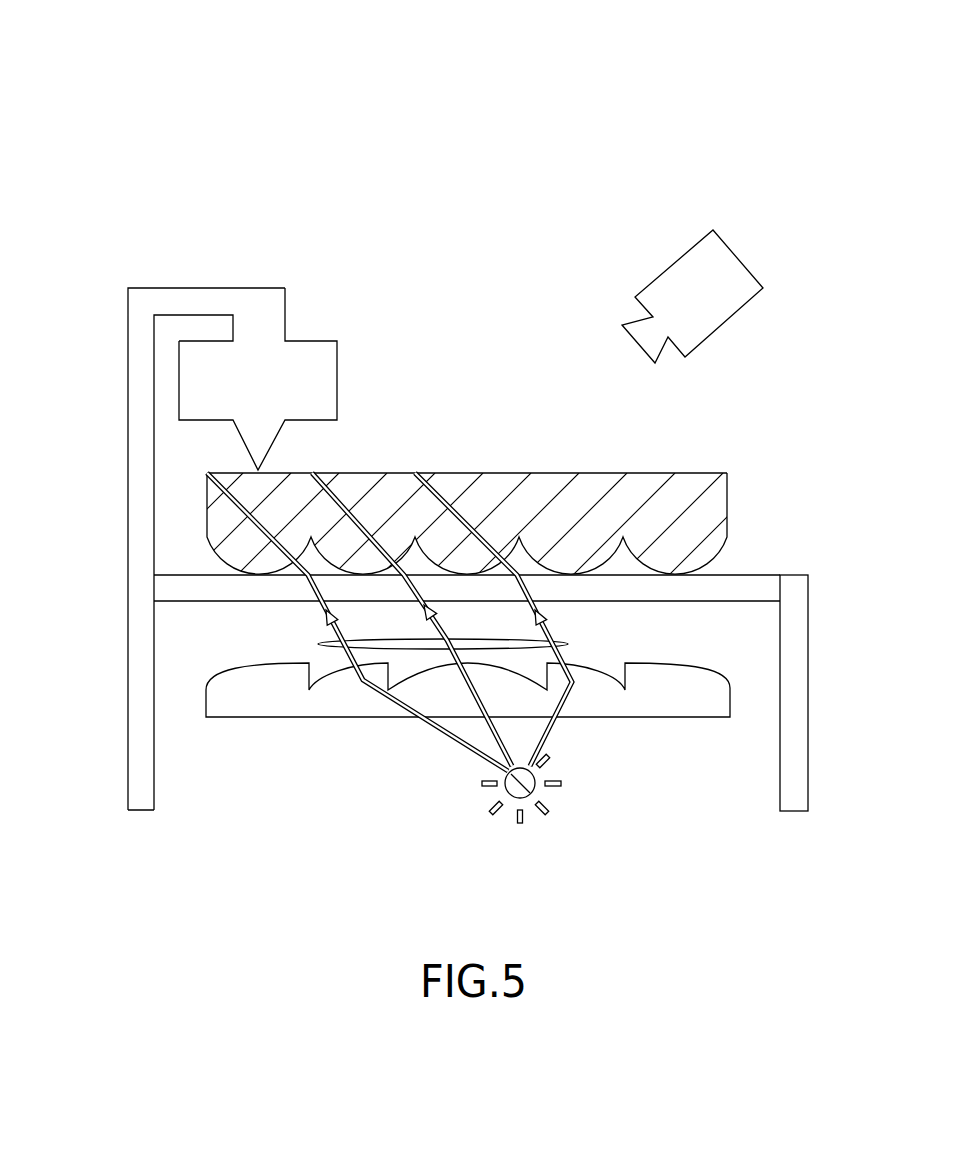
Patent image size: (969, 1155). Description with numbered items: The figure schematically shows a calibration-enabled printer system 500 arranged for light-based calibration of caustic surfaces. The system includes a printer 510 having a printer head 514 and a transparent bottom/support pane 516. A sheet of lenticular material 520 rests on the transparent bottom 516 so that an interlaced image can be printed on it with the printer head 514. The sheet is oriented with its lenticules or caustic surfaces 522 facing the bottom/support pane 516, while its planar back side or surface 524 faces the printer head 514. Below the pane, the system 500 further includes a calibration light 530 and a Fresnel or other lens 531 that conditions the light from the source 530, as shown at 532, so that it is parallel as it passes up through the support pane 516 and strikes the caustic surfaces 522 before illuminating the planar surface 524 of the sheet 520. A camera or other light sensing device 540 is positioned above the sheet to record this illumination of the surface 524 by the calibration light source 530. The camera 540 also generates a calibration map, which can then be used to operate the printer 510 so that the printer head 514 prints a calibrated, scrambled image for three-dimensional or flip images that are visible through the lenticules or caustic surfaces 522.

The calibration-enabled printer system 500 is at (353, 108).
The printer 510 is at (93, 317).
The printer head 514 is at (362, 327).
The transparent bottom/support pane 516 is at (772, 575).
The sheet of lenticular material 520 is at (757, 458).
The lenticules or caustic surfaces 522 is at (723, 547).
The planar back side or surface 524 is at (648, 473).
The calibration light 530 is at (495, 825).
The Fresnel or other lens 531 is at (670, 735).
The conditioned light 532 is at (562, 643).
The camera or other light sensing device 540 is at (668, 248).